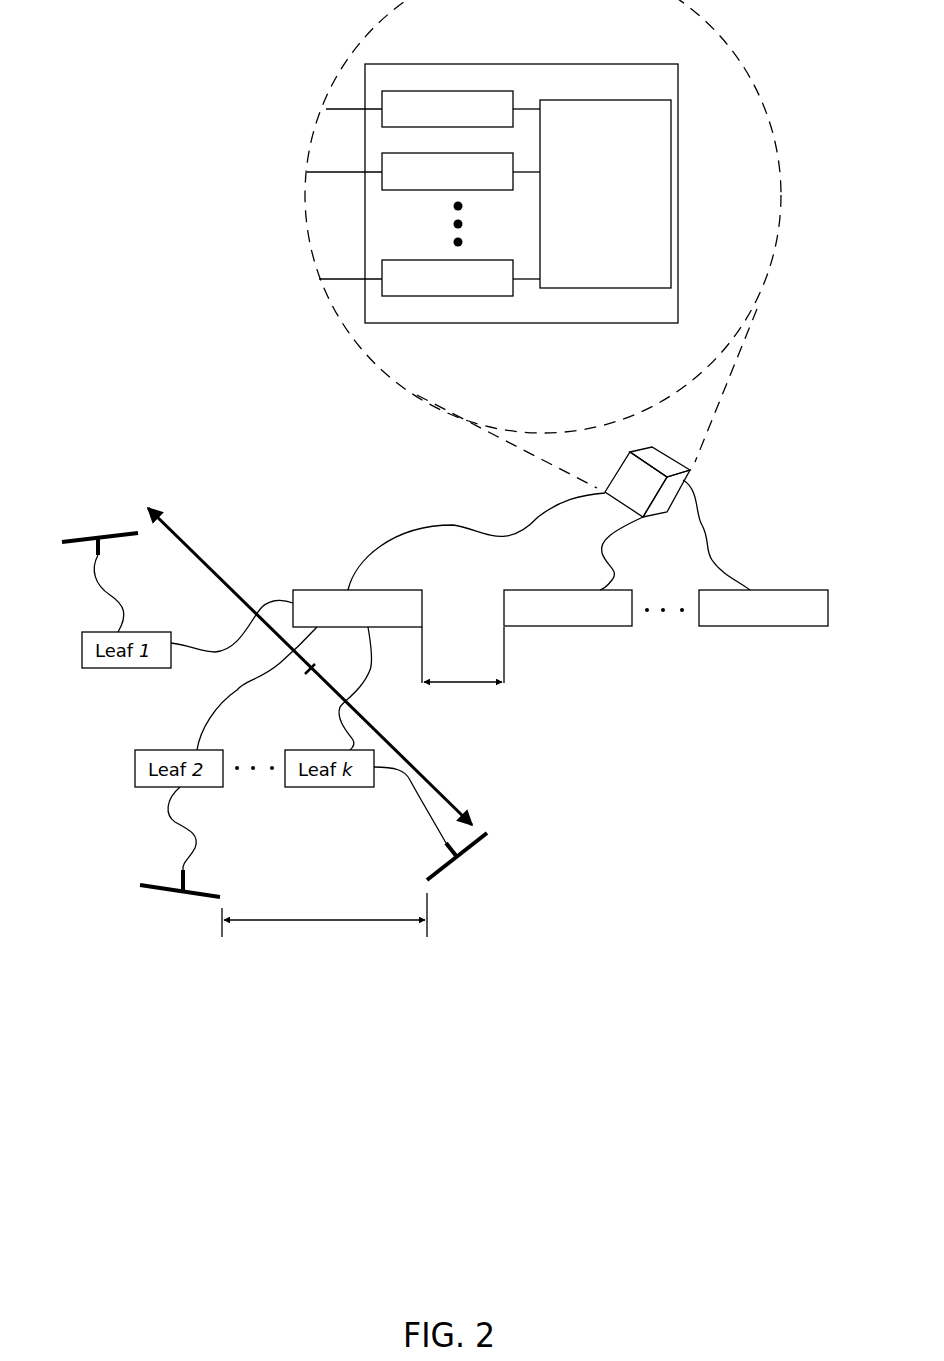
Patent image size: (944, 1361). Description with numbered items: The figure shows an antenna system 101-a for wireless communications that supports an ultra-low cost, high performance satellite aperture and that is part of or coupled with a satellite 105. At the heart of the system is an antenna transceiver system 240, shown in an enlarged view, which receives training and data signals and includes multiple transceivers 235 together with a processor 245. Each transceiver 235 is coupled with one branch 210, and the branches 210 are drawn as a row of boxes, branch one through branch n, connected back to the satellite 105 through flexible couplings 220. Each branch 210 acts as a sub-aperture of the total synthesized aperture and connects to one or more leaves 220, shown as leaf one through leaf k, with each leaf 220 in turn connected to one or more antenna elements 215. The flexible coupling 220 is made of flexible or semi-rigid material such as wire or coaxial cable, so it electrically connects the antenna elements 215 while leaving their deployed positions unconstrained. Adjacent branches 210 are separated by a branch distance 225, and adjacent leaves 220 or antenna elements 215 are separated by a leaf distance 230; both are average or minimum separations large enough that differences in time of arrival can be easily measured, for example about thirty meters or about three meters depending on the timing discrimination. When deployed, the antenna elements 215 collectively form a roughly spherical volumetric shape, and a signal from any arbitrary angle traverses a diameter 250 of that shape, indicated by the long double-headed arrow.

The antenna system 101-a is at (697, 942).
The satellite 105 is at (690, 472).
The branches 210 is at (777, 627).
The antenna elements 215 is at (440, 872).
The flexible coupling 220 is at (538, 517).
The branch distance 225 is at (458, 685).
The leaf distance 230 is at (323, 922).
The transceivers 235 is at (462, 127).
The antenna transceiver system 240 is at (552, 323).
The processor 245 is at (575, 288).
The diameter 250 is at (192, 548).